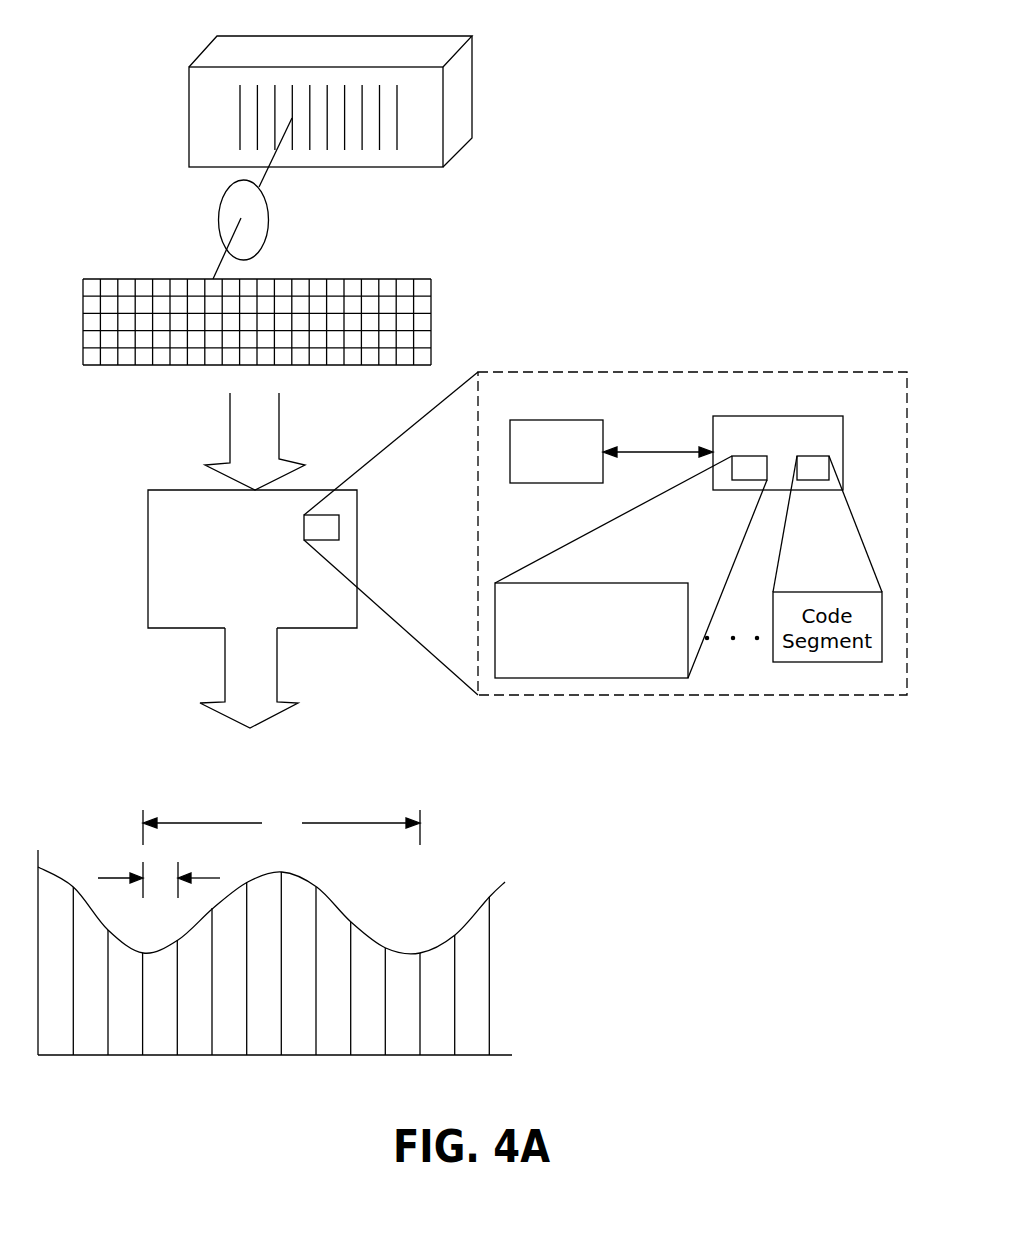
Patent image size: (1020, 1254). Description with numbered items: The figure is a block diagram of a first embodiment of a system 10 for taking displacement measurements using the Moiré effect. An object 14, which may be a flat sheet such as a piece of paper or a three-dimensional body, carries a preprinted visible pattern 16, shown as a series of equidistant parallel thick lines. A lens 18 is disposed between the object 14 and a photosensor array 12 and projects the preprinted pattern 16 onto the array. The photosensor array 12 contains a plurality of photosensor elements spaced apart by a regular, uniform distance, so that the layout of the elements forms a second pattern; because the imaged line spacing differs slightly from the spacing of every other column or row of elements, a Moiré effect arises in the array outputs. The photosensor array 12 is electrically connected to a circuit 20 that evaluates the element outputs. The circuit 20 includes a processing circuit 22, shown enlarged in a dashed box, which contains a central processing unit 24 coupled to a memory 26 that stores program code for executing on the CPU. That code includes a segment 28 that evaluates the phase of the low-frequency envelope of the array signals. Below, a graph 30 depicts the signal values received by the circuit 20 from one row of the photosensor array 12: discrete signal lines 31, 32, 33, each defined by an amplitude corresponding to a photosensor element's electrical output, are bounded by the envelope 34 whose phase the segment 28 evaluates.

The system 10 is at (655, 195).
The photosensor array 12 is at (420, 283).
The object 14 is at (392, 125).
The preprinted visible pattern 16 is at (404, 121).
The lens 18 is at (269, 230).
The circuit 20 is at (148, 558).
The processing circuit 22 is at (339, 528).
The central processing unit 24 is at (520, 420).
The memory 26 is at (723, 416).
The segment 28 is at (613, 583).
The graph 30 is at (381, 985).
The discrete signal line 31 is at (177, 1027).
The discrete signal line 32 is at (212, 1027).
The discrete signal line 33 is at (247, 1027).
The envelope 34 is at (472, 910).